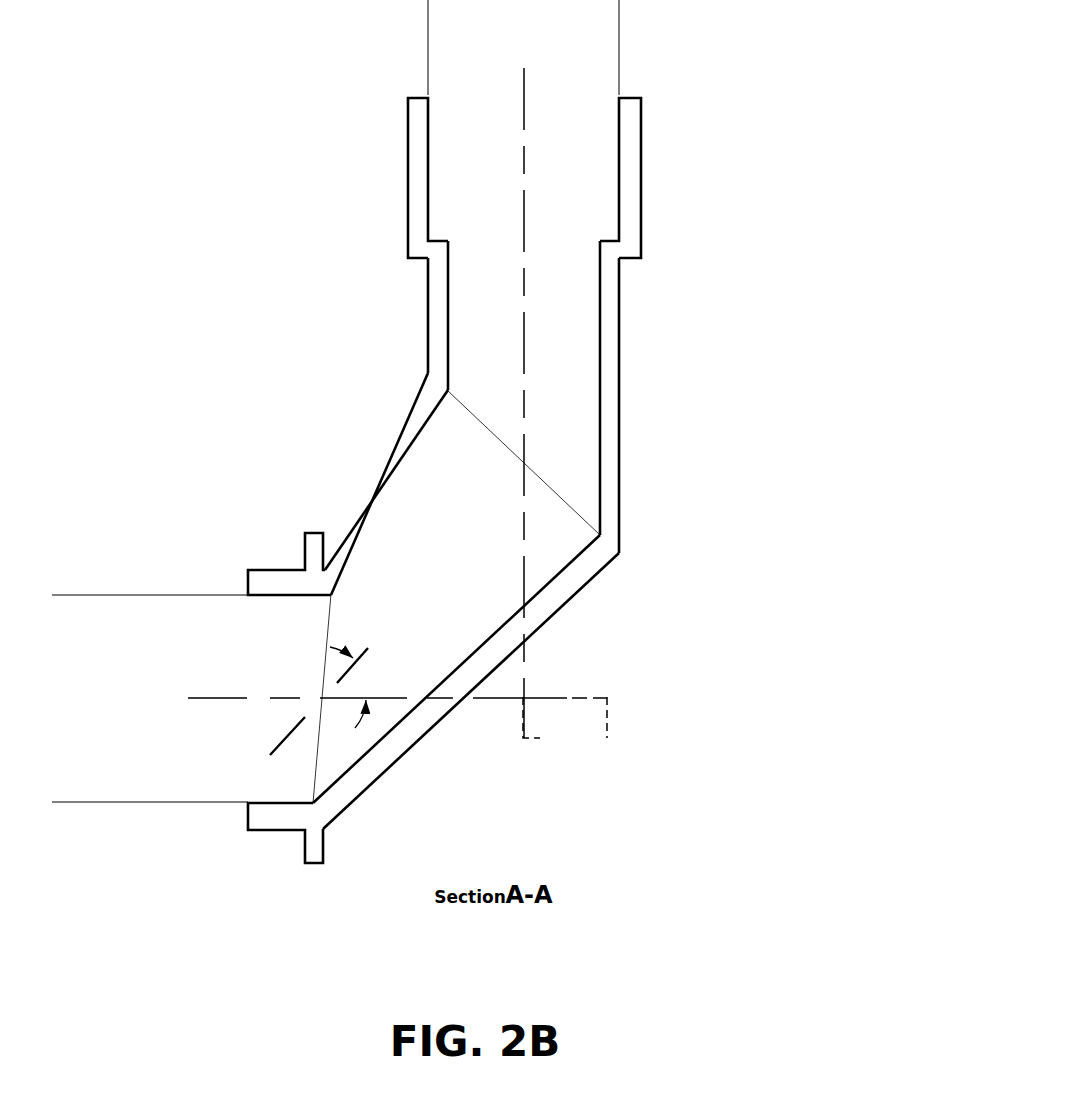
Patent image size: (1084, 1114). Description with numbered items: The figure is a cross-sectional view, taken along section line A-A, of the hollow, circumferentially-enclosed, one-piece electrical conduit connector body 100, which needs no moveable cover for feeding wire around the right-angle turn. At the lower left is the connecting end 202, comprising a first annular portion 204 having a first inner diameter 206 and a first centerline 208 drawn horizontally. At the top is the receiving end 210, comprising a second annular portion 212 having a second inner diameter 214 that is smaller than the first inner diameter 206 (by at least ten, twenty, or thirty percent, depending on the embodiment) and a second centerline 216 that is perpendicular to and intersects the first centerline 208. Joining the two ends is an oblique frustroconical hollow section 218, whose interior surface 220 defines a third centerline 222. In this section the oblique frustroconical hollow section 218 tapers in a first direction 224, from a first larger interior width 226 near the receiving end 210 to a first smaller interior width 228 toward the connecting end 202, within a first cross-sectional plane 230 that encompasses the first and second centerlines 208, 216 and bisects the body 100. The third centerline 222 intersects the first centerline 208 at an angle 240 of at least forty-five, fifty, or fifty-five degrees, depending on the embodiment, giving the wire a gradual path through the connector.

The electrical conduit connector body 100 is at (845, 102).
The connecting end 202 is at (248, 552).
The first annular portion 204 is at (277, 817).
The first inner diameter 206 is at (66, 802).
The first centerline 208 is at (212, 700).
The receiving end 210 is at (393, 102).
The second annular portion 212 is at (418, 160).
The second inner diameter 214 is at (619, 13).
The second centerline 216 is at (523, 82).
The oblique frustroconical hollow section 218 is at (333, 540).
The interior surface 220 is at (472, 570).
The third centerline 222 is at (284, 738).
The first direction 224 is at (375, 562).
The first larger interior width 226 is at (593, 546).
The first smaller interior width 228 is at (337, 589).
The first cross-sectional plane 230 is at (546, 733).
The angle 240 is at (374, 699).